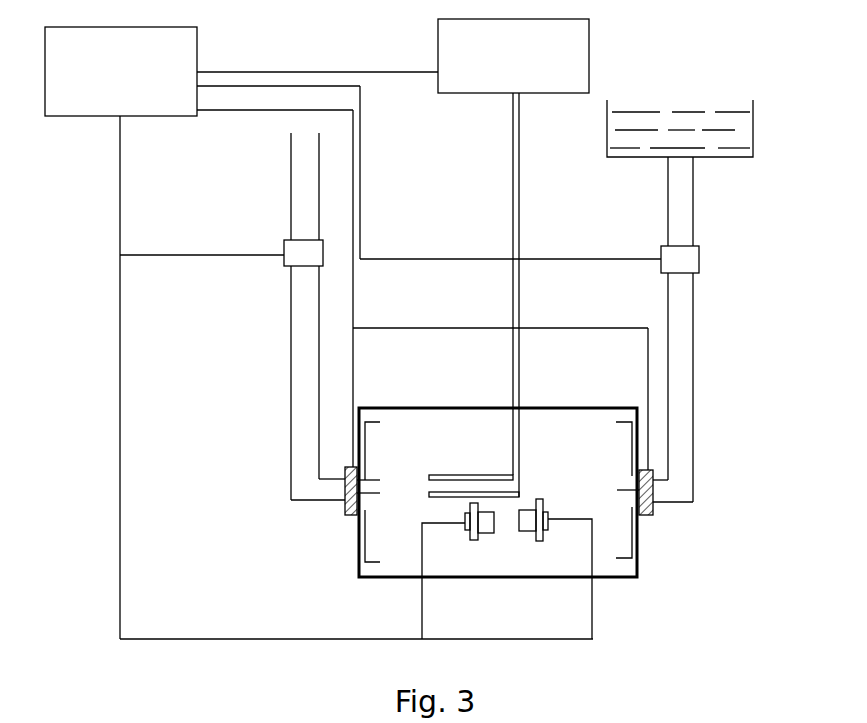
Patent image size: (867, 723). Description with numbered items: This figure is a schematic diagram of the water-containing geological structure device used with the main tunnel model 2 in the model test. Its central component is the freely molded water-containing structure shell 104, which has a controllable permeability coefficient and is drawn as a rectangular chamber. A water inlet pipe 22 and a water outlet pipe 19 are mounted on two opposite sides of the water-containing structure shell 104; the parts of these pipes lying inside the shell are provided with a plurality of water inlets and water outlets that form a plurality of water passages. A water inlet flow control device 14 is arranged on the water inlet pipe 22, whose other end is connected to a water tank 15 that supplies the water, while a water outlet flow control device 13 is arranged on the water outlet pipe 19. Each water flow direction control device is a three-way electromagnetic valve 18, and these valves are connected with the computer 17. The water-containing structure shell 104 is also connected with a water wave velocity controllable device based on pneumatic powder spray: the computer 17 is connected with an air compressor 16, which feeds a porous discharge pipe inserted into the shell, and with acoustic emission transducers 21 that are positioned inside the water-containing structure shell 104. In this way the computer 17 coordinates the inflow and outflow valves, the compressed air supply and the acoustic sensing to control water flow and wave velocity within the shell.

The main tunnel model 2 is at (445, 475).
The water outlet flow control device 13 is at (314, 316).
The water inlet flow control device 14 is at (676, 329).
The water tank 15 is at (735, 130).
The air compressor 16 is at (513, 258).
The computer 17 is at (353, 333).
The three-way electromagnetic valve 18 is at (345, 513).
The water outlet pipe 19 is at (368, 427).
The acoustic emission transducer 21 is at (490, 527).
The water inlet pipe 22 is at (633, 447).
The water-containing structure shell 104 is at (620, 578).